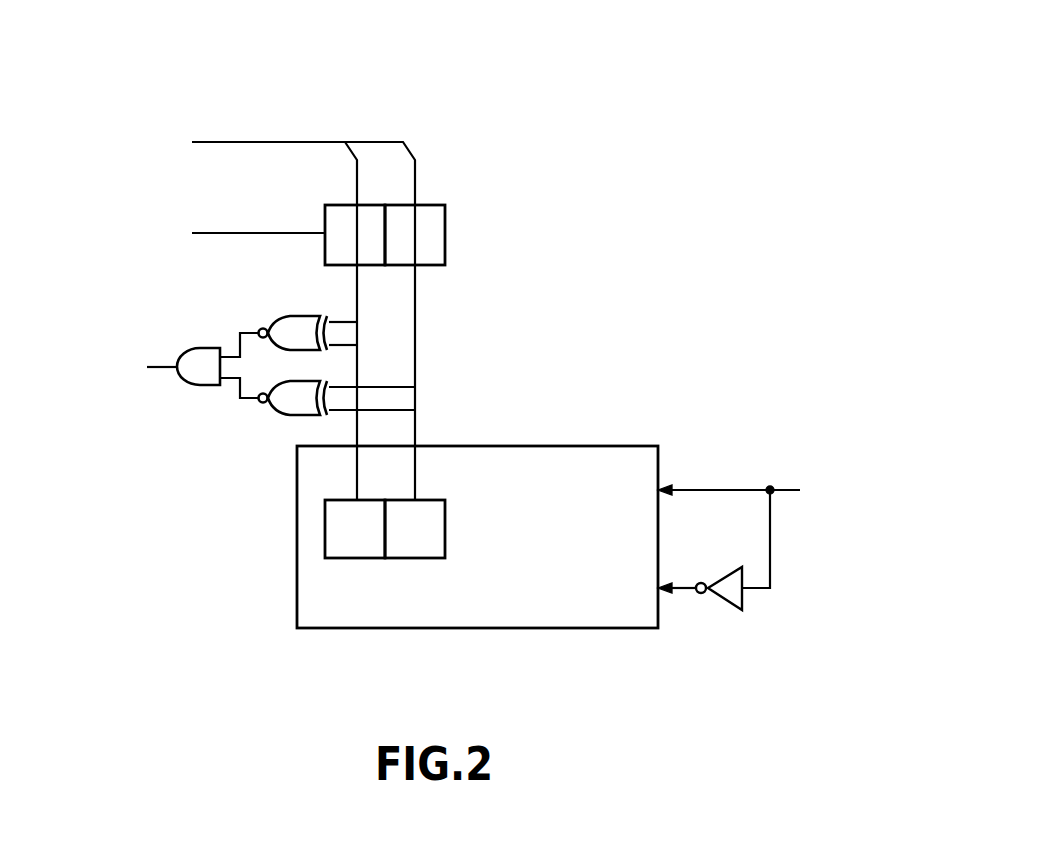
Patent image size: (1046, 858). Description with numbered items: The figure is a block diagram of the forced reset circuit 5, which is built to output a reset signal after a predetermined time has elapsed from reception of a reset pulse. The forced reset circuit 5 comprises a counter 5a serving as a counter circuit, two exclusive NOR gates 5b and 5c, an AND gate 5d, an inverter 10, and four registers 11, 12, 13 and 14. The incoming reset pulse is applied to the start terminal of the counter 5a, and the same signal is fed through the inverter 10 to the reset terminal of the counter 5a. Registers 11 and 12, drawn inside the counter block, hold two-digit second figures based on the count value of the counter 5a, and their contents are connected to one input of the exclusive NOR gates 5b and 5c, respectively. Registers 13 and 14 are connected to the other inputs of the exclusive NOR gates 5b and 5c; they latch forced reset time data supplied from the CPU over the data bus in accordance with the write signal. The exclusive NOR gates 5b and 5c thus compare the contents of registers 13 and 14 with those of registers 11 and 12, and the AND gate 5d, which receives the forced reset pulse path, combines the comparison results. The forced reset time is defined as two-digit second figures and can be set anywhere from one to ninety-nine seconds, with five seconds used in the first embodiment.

The forced reset circuit 5 is at (448, 105).
The counter 5a is at (577, 446).
The exclusive NOR gate 5b is at (298, 315).
The exclusive NOR gate 5c is at (287, 417).
The AND gate 5d is at (207, 347).
The inverter 10 is at (723, 603).
The register 11 is at (340, 500).
The register 12 is at (438, 500).
The register 13 is at (335, 203).
The register 14 is at (440, 203).